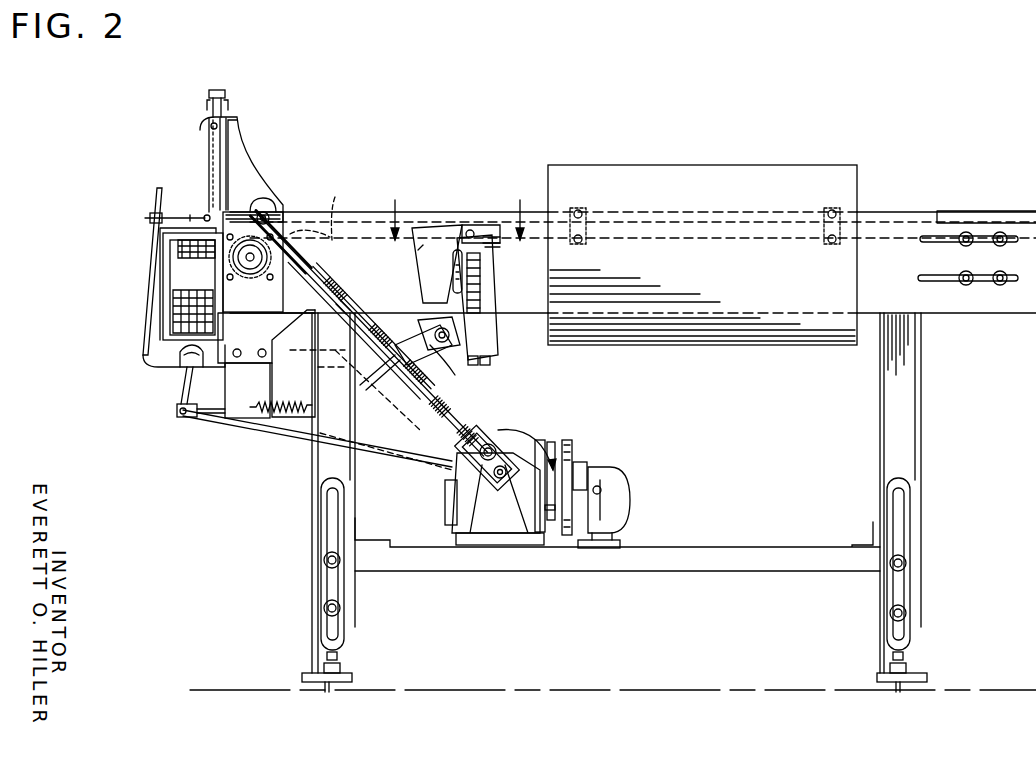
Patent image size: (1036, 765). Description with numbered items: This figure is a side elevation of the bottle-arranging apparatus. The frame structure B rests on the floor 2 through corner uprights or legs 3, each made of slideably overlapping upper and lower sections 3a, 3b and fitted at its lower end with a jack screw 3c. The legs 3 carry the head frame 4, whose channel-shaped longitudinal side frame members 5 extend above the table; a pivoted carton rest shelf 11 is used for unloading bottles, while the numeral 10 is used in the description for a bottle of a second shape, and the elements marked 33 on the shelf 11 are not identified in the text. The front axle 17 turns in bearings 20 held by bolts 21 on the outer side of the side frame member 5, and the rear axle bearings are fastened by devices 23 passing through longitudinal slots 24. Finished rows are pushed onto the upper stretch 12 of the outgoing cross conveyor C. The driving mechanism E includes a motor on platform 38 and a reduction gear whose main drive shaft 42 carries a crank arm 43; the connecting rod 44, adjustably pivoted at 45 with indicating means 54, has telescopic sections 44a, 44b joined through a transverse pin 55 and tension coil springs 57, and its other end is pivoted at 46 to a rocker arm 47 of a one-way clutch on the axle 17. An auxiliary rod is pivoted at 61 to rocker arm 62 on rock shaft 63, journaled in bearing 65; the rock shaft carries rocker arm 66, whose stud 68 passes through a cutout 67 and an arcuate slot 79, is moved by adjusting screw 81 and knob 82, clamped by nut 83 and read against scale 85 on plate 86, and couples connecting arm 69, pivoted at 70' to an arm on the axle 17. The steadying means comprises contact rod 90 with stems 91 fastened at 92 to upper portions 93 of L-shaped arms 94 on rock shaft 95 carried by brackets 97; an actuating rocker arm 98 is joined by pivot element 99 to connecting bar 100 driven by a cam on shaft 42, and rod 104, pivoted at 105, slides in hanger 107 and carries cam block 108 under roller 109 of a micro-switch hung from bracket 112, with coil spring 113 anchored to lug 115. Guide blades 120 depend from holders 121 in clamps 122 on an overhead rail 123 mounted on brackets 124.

The floor 2 is at (722, 690).
The corner uprights or legs 3 is at (925, 400).
The upper leg section 3a is at (910, 444).
The lower leg section 3b is at (912, 502).
The supporting jack screw 3c is at (905, 660).
The head frame 4 is at (889, 210).
The longitudinal side frame member 5 is at (925, 300).
The bottle 10 is at (455, 208).
The pivoted carton rest shelf 11 is at (768, 300).
The upper stretch of outgoing conveyor 12 is at (150, 218).
The front axle 17 is at (252, 262).
The bearing 20 is at (288, 270).
The bolt 21 is at (246, 270).
The fastening device 23 is at (1000, 232).
The longitudinal slot 24 is at (924, 276).
The carriage guides 33 is at (590, 242).
The supporting platform 38 is at (630, 560).
The main drive shaft 42 is at (505, 485).
The crank arm 43 is at (480, 475).
The connecting rod 44 is at (400, 390).
The connecting rod inner section 44a is at (455, 428).
The connecting rod tubular section 44b is at (290, 248).
The adjustable pivotal connection 45 is at (492, 444).
The pivotal connection 46 is at (253, 212).
The rocker arm 47 is at (268, 212).
The indicating means 54 is at (500, 445).
The transverse pin 55 is at (348, 268).
The tension coil spring 57 is at (365, 290).
The pivotal connection 61 is at (360, 348).
The rocker arm 62 is at (400, 335).
The rock shaft 63 is at (448, 342).
The bearing 65 is at (452, 365).
The rocker arm 66 is at (470, 328).
The cutout 67 is at (420, 252).
The fastening stud 68 is at (480, 230).
The connecting arm 69 is at (345, 211).
The pivotal connection 70' is at (310, 223).
The arcuate slot 79 is at (490, 262).
The adjusting screw 81 is at (485, 295).
The knurled knob 82 is at (492, 360).
The knurled clamping nut 83 is at (468, 226).
The scale 85 is at (452, 258).
The plate 86 is at (452, 275).
The contact member 90 is at (207, 215).
The attaching stem 91 is at (195, 215).
The adjustable fastening 92 is at (155, 210).
The upper end portion 93 is at (160, 240).
The L-shaped arm 94 is at (146, 352).
The rock shaft 95 is at (182, 362).
The bracket 97 is at (266, 336).
The lever 98 is at (181, 400).
The pivot element 99 is at (178, 418).
The connecting bar 100 is at (268, 430).
The rod 104 is at (220, 396).
The pivotal mounting 105 is at (177, 414).
The depending hanger 107 is at (247, 390).
The cam block 108 is at (300, 447).
The roller 109 is at (310, 390).
The bracket 112 is at (313, 360).
The coil spring 113 is at (278, 385).
The apertured lug 115 is at (232, 420).
The guide blade 120 is at (208, 148).
The holder 121 is at (212, 125).
The clamp 122 is at (208, 92).
The overhead supporting rail structure 123 is at (205, 104).
The bracket 124 is at (248, 158).
The frame structure B is at (305, 478).
The outgoing cross conveyor C is at (160, 292).
The driving mechanism E is at (580, 443).